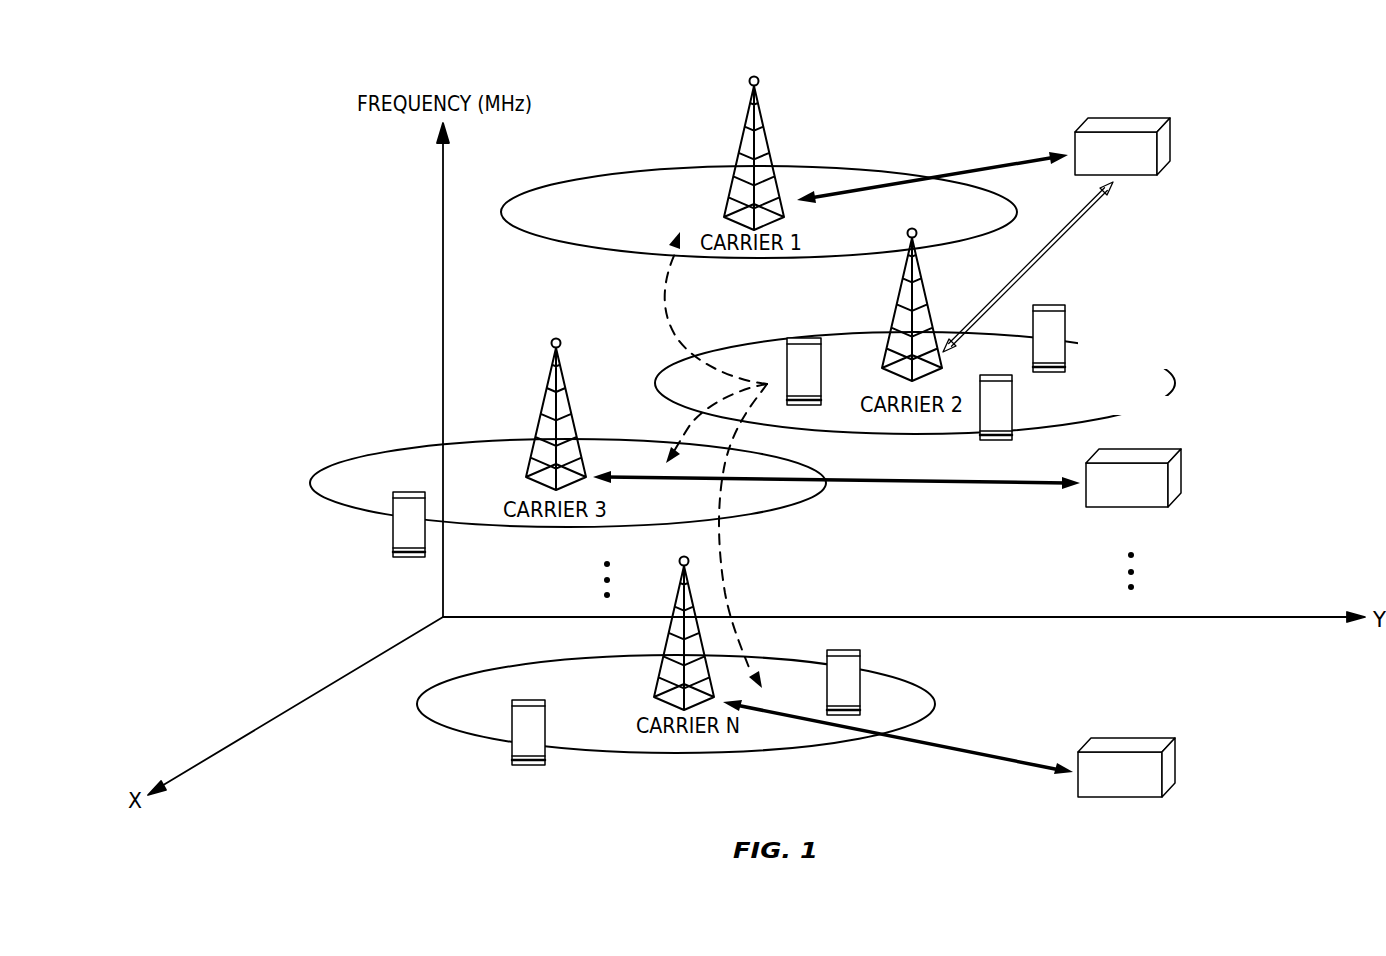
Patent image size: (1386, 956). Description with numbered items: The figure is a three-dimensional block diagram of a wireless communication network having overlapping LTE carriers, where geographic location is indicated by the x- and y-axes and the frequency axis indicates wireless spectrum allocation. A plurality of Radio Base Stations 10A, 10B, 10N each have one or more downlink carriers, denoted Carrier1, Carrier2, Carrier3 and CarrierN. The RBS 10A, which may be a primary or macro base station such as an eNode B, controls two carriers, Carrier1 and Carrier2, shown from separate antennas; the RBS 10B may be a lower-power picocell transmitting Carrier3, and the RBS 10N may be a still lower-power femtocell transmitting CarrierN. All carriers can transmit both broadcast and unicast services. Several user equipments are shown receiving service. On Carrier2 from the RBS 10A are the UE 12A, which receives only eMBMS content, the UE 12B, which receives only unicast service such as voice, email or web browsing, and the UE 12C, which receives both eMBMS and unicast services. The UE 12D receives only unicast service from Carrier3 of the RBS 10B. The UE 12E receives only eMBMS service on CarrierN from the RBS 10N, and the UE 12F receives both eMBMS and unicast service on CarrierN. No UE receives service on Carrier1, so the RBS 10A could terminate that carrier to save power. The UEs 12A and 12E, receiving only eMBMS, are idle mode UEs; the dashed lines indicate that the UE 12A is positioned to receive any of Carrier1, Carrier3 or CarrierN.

The radio base station 10A is at (1173, 128).
The radio base station 10B is at (1185, 462).
The radio base station 10N is at (1178, 752).
The user equipment 12A is at (807, 358).
The user equipment 12B is at (998, 420).
The user equipment 12C is at (1055, 320).
The user equipment 12D is at (398, 532).
The user equipment 12E is at (522, 735).
The user equipment 12F is at (850, 675).